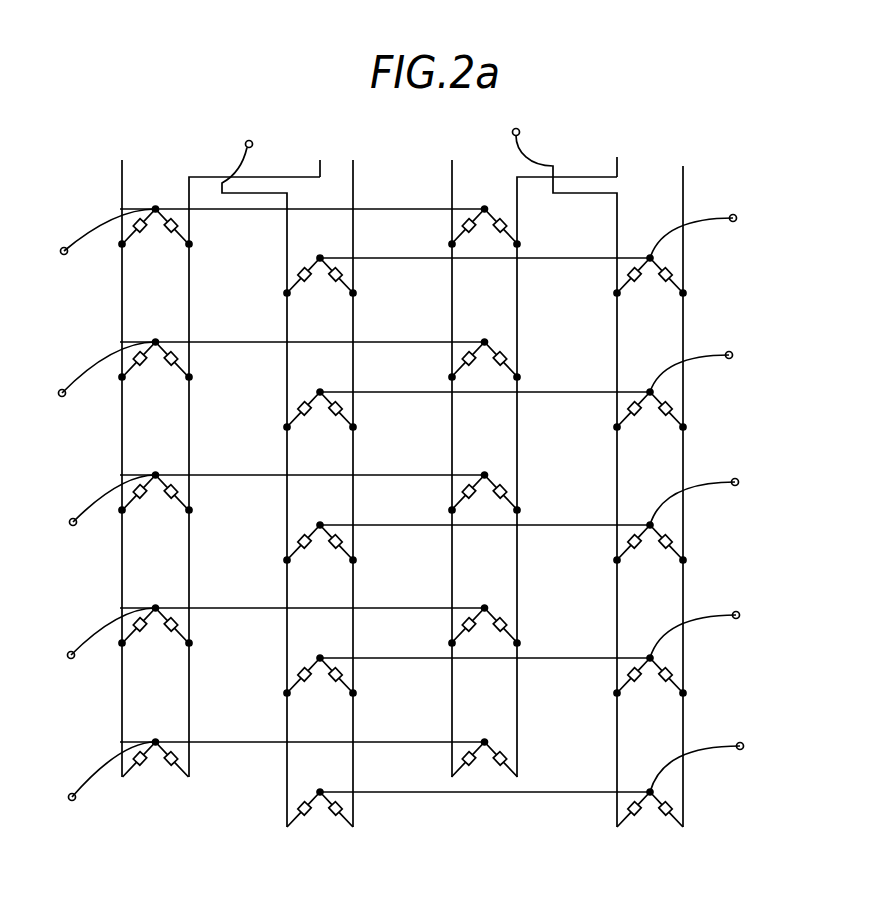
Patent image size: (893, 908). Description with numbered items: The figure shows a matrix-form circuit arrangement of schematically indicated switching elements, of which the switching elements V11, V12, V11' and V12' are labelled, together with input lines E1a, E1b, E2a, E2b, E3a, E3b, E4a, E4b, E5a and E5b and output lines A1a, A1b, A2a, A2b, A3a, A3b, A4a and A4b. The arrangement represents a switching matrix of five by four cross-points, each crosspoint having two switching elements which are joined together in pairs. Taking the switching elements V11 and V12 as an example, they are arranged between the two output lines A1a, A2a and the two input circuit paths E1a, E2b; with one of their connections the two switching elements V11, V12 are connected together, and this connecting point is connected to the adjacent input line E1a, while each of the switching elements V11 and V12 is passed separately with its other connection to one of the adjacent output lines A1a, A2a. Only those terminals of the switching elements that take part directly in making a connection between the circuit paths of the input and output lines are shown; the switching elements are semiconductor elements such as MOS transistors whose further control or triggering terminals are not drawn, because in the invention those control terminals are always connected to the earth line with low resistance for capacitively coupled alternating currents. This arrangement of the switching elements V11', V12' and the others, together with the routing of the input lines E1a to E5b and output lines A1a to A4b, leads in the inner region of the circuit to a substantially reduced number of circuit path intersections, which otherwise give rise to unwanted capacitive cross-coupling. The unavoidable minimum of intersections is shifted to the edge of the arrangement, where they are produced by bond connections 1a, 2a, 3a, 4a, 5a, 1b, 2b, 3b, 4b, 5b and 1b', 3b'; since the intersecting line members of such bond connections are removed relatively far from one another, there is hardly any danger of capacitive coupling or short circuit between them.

The output line A1a is at (126, 455).
The output line A1b is at (254, 457).
The output line A2a is at (325, 154).
The output line A2b is at (370, 479).
The output line A3a is at (452, 454).
The output line A3b is at (567, 456).
The output line A4a is at (617, 156).
The output line A4b is at (682, 481).
The bond connection 1b' is at (255, 484).
The bond connection 3b' is at (563, 465).
The input line E1a is at (265, 223).
The input line E2a is at (266, 367).
The input line E3a is at (268, 495).
The input line E4a is at (270, 629).
The input line E5a is at (272, 763).
The input line E1b is at (533, 247).
The input line E2b is at (535, 384).
The input line E3b is at (537, 517).
The input line E4b is at (538, 651).
The input line E5b is at (536, 780).
The bond connection 1a is at (87, 241).
The bond connection 2a is at (85, 390).
The bond connection 3a is at (93, 523).
The bond connection 4a is at (90, 652).
The bond connection 5a is at (94, 790).
The bond connection 1b is at (725, 207).
The bond connection 2b is at (731, 345).
The bond connection 3b is at (738, 473).
The bond connection 4b is at (738, 607).
The bond connection 5b is at (735, 735).
The switching element V11 is at (148, 241).
The switching element V12 is at (200, 229).
The switching element V11' is at (314, 294).
The switching element V12' is at (370, 282).